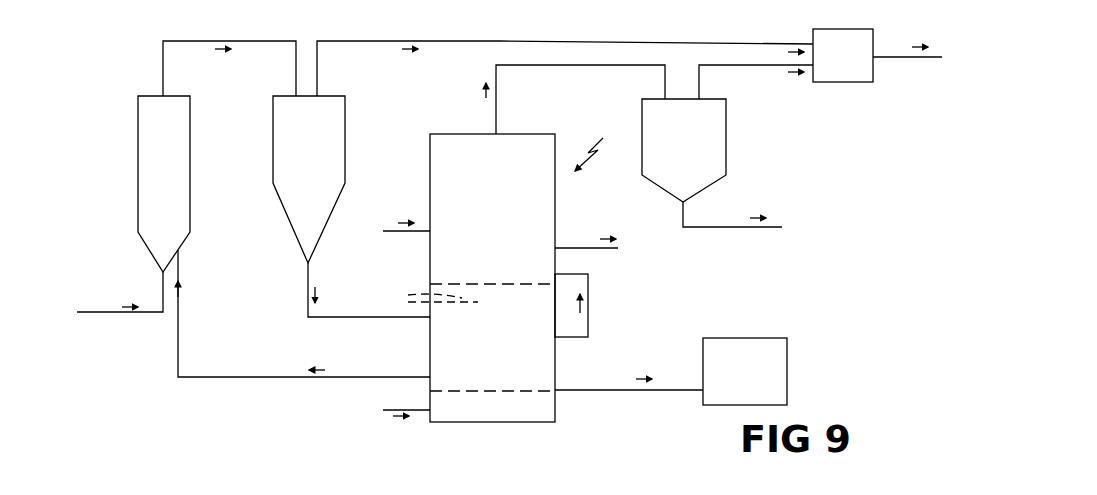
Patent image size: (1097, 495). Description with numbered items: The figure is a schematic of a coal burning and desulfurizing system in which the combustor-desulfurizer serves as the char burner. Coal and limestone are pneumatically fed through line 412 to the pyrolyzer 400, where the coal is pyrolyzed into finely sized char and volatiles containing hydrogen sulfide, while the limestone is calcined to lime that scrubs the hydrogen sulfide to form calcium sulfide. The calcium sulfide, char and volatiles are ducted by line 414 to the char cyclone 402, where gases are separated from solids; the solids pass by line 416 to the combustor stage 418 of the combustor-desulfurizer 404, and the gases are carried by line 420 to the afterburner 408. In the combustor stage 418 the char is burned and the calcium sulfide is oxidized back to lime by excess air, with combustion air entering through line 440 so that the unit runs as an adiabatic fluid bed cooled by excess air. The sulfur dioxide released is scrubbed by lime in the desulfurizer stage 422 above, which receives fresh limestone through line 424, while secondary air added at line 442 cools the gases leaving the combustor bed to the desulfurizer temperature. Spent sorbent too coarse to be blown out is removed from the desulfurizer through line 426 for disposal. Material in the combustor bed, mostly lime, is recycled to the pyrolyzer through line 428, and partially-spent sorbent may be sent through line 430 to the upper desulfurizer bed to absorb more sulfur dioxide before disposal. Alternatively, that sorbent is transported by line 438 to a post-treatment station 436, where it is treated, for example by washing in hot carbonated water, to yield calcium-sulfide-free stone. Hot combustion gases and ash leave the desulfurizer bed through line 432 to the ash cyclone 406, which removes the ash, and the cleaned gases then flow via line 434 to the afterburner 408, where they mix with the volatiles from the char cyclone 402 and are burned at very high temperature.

The pyrolyzer 400 is at (190, 158).
The char cyclone 402 is at (345, 150).
The combustor-desulfurizer 404 is at (594, 145).
The ash cyclone 406 is at (726, 133).
The afterburner 408 is at (873, 70).
The line 412 is at (110, 312).
The line 414 is at (187, 41).
The line 416 is at (343, 317).
The combustor stage 418 is at (443, 345).
The line 420 is at (363, 41).
The desulfurizer stage 422 is at (443, 170).
The line 424 is at (405, 230).
The line 426 is at (592, 248).
The line 428 is at (270, 377).
The line 430 is at (588, 302).
The line 432 is at (522, 65).
The line 434 is at (767, 65).
The post-treatment station 436 is at (767, 338).
The line 438 is at (603, 390).
The line 440 is at (395, 410).
The line 442 is at (424, 297).